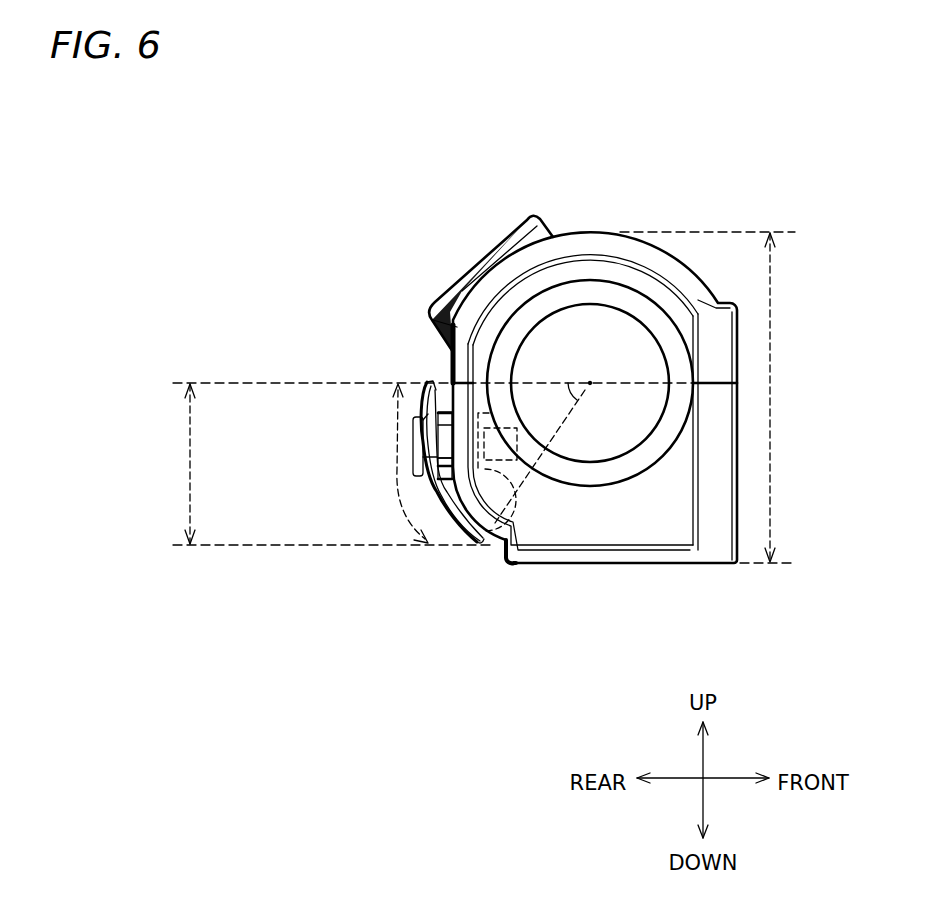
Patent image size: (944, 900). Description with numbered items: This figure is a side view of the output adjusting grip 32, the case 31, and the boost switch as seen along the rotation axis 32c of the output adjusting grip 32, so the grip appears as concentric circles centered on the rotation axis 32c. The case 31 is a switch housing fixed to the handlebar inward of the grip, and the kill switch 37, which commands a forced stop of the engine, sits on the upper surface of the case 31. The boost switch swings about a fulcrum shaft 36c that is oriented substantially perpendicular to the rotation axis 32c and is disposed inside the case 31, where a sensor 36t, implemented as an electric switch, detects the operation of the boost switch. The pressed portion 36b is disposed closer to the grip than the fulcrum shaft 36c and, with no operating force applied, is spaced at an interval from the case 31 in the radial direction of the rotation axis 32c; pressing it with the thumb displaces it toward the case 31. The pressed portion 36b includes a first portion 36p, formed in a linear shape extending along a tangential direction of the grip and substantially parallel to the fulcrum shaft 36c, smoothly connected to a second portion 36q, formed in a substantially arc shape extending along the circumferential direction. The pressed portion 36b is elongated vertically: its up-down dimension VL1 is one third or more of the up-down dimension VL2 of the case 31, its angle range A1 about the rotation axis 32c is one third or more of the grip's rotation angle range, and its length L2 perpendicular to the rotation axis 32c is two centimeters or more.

The case 31 is at (643, 252).
The output adjusting grip 32 is at (598, 287).
The rotation axis 32c is at (590, 382).
The kill switch 37 is at (462, 296).
The pressed portion 36b is at (303, 406).
The first portion 36p is at (373, 383).
The second portion 36q is at (373, 461).
The sensor 36t is at (520, 440).
The fulcrum shaft 36c is at (501, 545).
The angle range A1 is at (540, 452).
The length L2 is at (393, 520).
The dimension of the pressed portion in the up-down direction VL1 is at (310, 464).
The dimension of the case in the up-down direction VL2 is at (726, 397).